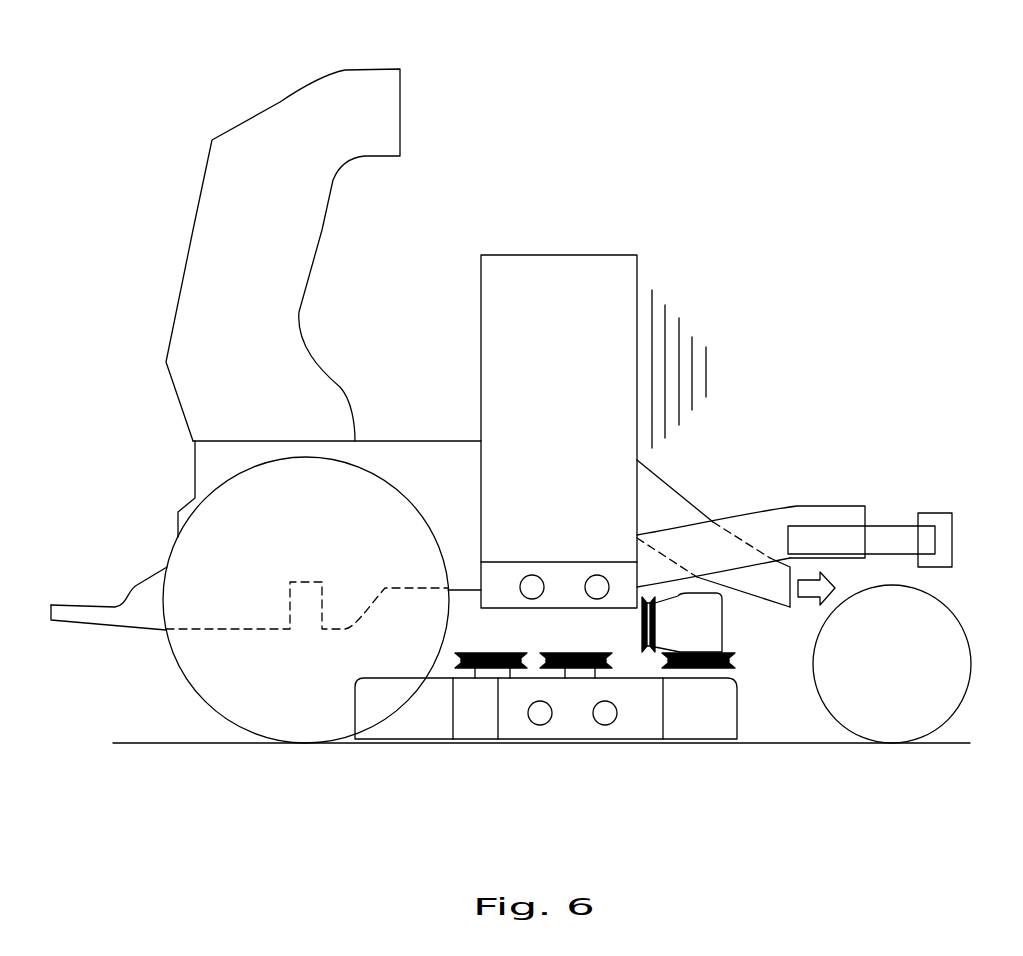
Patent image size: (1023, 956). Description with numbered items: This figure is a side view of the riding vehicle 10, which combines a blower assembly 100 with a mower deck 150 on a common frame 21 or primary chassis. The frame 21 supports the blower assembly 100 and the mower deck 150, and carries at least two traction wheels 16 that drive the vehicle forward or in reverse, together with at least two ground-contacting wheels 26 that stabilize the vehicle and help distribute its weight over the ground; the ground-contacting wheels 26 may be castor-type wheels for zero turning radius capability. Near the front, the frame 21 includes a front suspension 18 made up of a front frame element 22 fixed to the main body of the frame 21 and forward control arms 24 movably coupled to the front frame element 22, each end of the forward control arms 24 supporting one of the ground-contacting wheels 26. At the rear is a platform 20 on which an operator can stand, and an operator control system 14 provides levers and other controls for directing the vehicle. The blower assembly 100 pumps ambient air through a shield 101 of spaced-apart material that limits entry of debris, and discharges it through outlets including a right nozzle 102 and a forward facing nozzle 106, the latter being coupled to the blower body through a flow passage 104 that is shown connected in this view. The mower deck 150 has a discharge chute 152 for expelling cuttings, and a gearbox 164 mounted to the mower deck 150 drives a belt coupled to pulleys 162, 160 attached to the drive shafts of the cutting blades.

The riding vehicle 10 is at (745, 228).
The operator control system 14 is at (238, 91).
The traction wheels 16 is at (200, 697).
The front suspension 18 is at (847, 472).
The platform 20 is at (88, 605).
The frame 21 is at (463, 588).
The front frame element 22 is at (808, 505).
The forward control arms 24 is at (930, 513).
The ground-contacting wheels 26 is at (958, 622).
The blower assembly 100 is at (567, 255).
The shield 101 is at (665, 330).
The right nozzle 102 is at (570, 562).
The flow passage 104 is at (680, 497).
The forward facing nozzle 106 is at (793, 600).
The mower deck 150 is at (402, 740).
The discharge chute 152 is at (622, 740).
The pulley 160 is at (565, 653).
The pulley 162 is at (482, 653).
The gearbox 164 is at (710, 637).